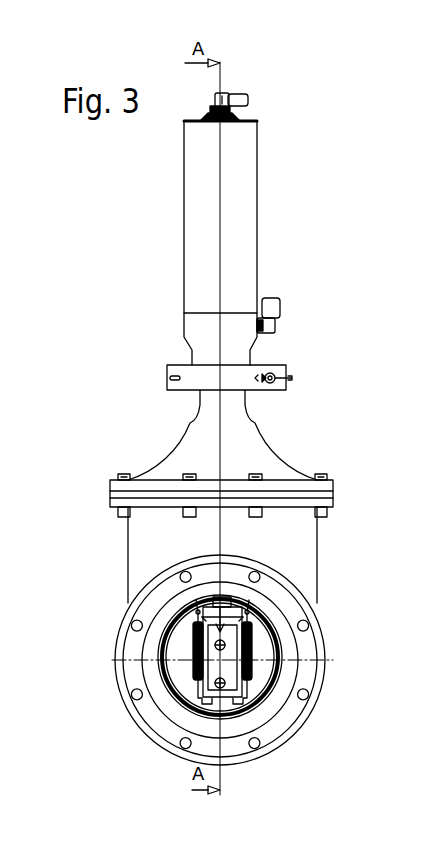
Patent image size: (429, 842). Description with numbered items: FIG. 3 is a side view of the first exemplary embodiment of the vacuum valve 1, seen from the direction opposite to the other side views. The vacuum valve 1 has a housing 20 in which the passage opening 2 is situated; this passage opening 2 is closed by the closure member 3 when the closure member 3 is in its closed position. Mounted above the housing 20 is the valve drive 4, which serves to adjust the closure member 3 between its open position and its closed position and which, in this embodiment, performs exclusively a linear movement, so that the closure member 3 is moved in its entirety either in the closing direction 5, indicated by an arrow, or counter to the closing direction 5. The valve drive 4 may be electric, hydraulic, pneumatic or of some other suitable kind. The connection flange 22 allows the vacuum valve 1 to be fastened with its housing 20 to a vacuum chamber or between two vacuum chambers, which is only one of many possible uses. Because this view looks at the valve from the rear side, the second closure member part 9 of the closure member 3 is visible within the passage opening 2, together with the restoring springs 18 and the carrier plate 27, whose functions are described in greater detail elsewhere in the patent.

The vacuum valve 1 is at (270, 228).
The valve drive 4 is at (195, 235).
The housing 20 is at (290, 452).
The connection flange 22 is at (293, 718).
The second closure member part 9 is at (178, 650).
The passage opening 2 is at (268, 668).
The closure member 3 is at (180, 675).
The closing direction 5 is at (213, 608).
The carrier plate 27 is at (212, 678).
The restoring springs 18 is at (203, 645).